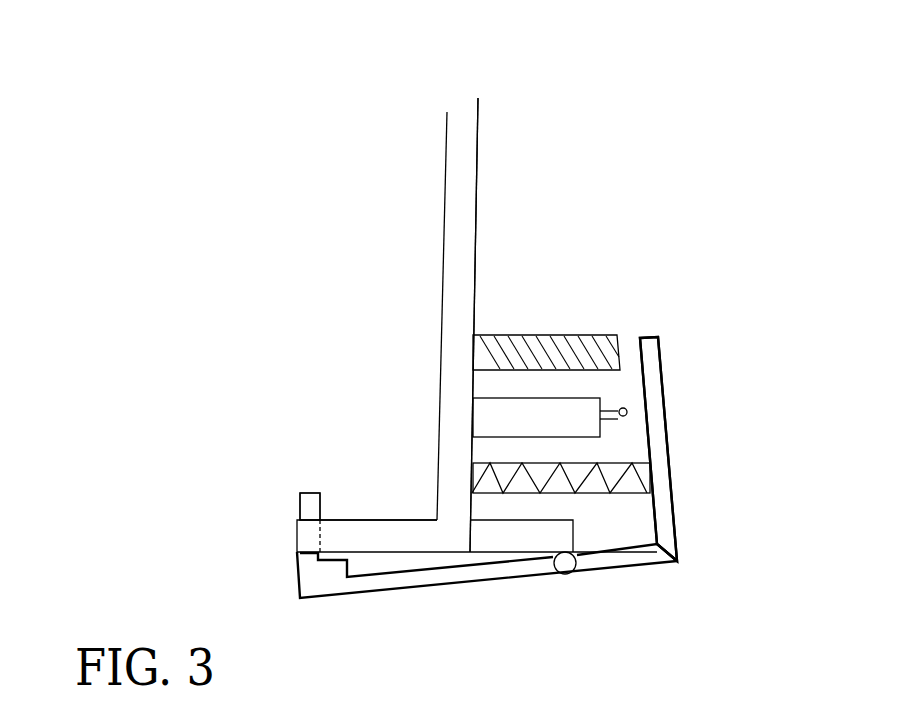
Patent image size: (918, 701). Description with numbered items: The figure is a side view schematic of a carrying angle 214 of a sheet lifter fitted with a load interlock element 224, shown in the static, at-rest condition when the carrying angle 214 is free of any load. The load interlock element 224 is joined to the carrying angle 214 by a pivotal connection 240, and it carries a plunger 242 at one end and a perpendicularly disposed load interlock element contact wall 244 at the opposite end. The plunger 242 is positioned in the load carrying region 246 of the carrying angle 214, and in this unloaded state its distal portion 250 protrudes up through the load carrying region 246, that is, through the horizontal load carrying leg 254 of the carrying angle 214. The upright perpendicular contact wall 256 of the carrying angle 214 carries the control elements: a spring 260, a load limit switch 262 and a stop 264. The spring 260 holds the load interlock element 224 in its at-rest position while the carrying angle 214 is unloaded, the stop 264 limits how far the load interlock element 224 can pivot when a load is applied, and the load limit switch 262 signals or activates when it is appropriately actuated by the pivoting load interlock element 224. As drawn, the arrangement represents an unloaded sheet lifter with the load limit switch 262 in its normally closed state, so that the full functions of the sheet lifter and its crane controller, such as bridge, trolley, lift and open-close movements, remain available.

The carrying angle 214 is at (530, 311).
The load interlock element 224 is at (702, 442).
The pivotal connection 240 is at (565, 575).
The plunger 242 is at (206, 471).
The load interlock element contact wall 244 is at (640, 366).
The load carrying region 246 is at (338, 510).
The distal portion 250 is at (310, 493).
The horizontal load carrying leg 254 is at (377, 537).
The perpendicular contact wall 256 is at (478, 250).
The spring 260 is at (473, 393).
The load limit switch 262 is at (444, 325).
The stop 264 is at (441, 259).